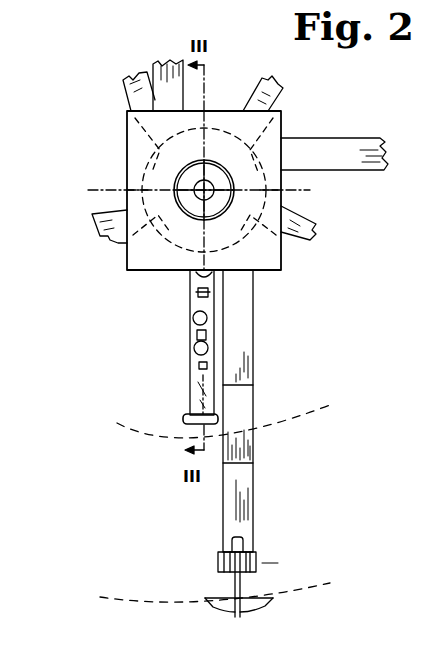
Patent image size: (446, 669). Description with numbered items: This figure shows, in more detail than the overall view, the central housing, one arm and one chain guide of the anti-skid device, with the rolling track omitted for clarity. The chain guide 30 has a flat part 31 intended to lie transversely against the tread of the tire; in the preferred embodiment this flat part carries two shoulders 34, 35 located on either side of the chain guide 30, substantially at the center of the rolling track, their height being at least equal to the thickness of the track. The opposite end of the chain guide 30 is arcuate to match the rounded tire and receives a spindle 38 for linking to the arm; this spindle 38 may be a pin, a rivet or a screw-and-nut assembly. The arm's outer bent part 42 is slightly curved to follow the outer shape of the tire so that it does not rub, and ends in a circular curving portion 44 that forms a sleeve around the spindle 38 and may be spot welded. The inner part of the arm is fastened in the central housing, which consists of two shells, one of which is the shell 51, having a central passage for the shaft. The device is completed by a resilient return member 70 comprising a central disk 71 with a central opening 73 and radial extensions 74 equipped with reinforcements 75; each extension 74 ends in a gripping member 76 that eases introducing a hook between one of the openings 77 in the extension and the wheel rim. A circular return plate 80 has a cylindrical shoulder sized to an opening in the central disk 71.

The chain guide 30 is at (190, 586).
The flat part 31 is at (232, 610).
The shoulder 34 is at (210, 604).
The shoulder 35 is at (258, 606).
The spindle 38 is at (218, 563).
The outer bent part 42 is at (245, 476).
The circular curving portion 44 is at (267, 575).
The shell 51 is at (282, 126).
The resilient return member 70 is at (188, 284).
The central disk 71 is at (122, 143).
The central opening 73 is at (135, 183).
The radial extension 74 is at (190, 322).
The reinforcement 75 is at (192, 350).
The gripping member 76 is at (183, 418).
The opening 77 is at (197, 368).
The return plate 80 is at (212, 108).